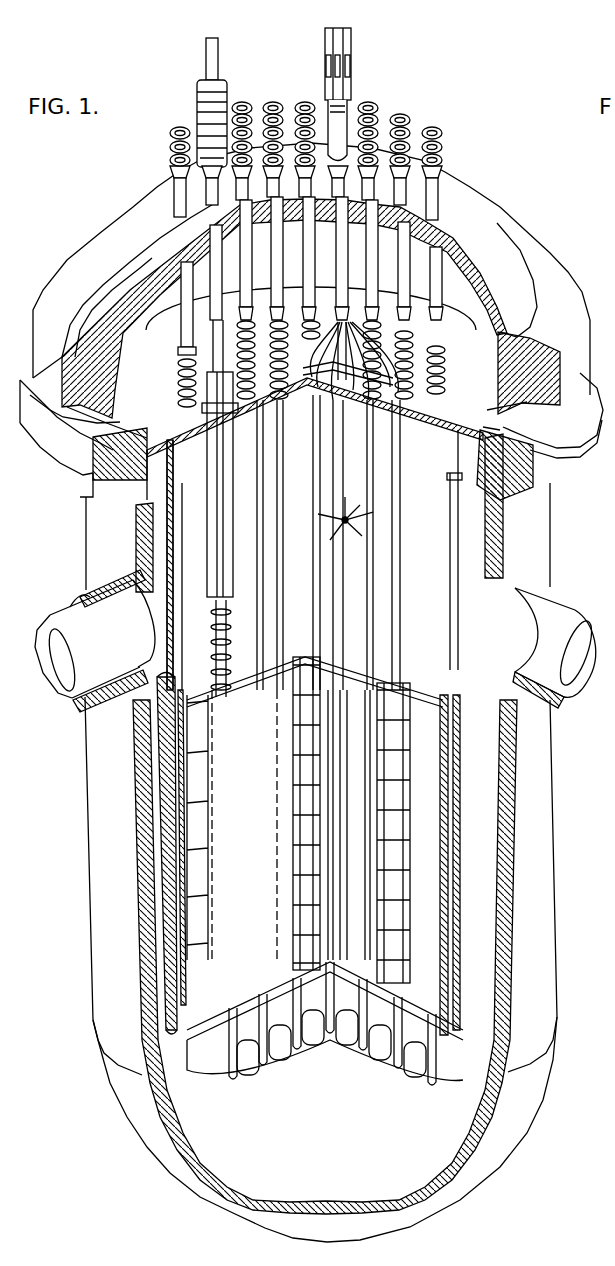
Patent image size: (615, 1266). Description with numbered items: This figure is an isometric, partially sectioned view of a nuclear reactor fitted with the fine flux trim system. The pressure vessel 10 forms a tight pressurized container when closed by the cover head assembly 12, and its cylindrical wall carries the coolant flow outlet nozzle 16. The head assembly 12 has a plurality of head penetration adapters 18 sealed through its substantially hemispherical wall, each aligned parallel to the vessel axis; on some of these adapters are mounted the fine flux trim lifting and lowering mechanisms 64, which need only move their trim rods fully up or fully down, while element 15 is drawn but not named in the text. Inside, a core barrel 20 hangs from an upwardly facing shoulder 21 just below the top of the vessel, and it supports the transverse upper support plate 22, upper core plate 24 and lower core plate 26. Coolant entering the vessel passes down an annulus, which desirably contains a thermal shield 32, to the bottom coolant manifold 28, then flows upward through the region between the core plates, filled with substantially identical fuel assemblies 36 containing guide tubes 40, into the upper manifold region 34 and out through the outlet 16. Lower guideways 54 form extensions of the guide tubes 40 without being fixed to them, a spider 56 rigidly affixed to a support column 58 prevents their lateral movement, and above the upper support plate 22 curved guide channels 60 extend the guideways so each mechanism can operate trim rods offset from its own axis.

The pressure vessel 10 is at (552, 527).
The cover head assembly 12 is at (490, 223).
The control rod drive mechanism housing 15 is at (203, 100).
The coolant flow outlet nozzle 16 is at (60, 673).
The head penetration adapter 18 is at (270, 103).
The core barrel 20 is at (183, 768).
The upwardly facing shoulder 21 is at (304, 732).
The upper support plate 22 is at (587, 438).
The upper core plate 24 is at (427, 690).
The lower core plate 26 is at (452, 1030).
The bottom coolant manifold 28 is at (342, 1143).
The thermal shield 32 is at (470, 857).
The upper manifold region 34 is at (309, 555).
The fuel assembly 36 is at (300, 823).
The guide tube 40 is at (325, 893).
The lower guideway 54 is at (335, 571).
The spider 56 is at (363, 518).
The support column 58 is at (360, 465).
The curved guide channel 60 is at (400, 340).
The fine flux trim lifting and lowering mechanism 64 is at (347, 40).